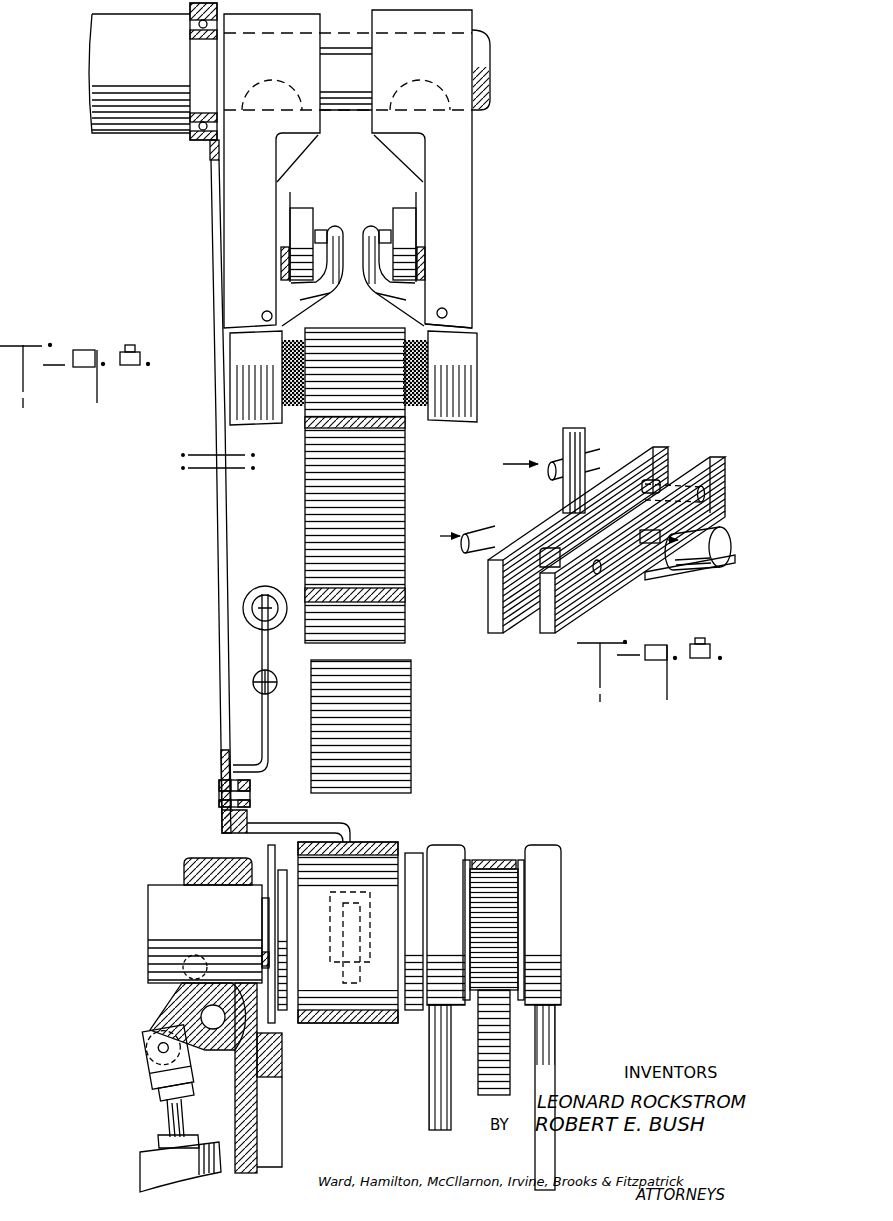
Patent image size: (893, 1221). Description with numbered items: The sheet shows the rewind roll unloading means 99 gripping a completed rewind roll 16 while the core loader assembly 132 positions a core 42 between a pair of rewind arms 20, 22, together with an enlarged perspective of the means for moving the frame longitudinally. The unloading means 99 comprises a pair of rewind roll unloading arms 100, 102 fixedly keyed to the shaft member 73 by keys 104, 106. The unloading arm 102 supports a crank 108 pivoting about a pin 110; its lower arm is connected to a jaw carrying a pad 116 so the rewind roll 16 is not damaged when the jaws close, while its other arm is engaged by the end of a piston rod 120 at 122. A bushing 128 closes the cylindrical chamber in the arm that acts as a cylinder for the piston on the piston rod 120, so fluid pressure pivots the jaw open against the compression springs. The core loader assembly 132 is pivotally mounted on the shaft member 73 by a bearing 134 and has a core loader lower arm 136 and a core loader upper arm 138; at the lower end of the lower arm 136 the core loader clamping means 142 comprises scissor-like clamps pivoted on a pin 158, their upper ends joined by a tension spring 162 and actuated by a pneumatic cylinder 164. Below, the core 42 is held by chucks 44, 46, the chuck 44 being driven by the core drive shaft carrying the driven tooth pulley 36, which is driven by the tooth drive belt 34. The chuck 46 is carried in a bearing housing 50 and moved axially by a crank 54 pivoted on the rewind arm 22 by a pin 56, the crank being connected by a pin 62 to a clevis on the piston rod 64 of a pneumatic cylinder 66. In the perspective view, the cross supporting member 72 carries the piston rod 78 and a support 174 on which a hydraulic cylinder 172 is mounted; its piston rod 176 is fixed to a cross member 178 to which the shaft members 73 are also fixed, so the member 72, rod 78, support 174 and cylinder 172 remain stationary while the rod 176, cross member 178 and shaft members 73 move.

In FIG. 8, the rewind roll 16 is at (412, 733).
In FIG. 8, the rewind arm 20 is at (548, 1053).
In FIG. 8, the rewind arm 22 is at (258, 1147).
In FIG. 8, the tooth drive belt 34 is at (508, 1030).
In FIG. 8, the driven tooth pulley 36 is at (491, 868).
In FIG. 8, the core 42 is at (377, 844).
In FIG. 8, the chuck 44 is at (417, 1012).
In FIG. 8, the chuck 46 is at (268, 850).
In FIG. 8, the bearing housing 50 is at (153, 905).
In FIG. 8, the crank 54 is at (180, 1002).
In FIG. 8, the pin 56 is at (215, 1030).
In FIG. 8, the pin 62 is at (160, 1047).
In FIG. 8, the piston rod 64 is at (167, 1117).
In FIG. 8, the pneumatic cylinder 66 is at (150, 1167).
In FIG. 9, the cross supporting member 72 is at (495, 603).
In FIG. 8, the shaft member 73 is at (478, 52).
In FIG. 9, the shaft member 73 is at (488, 538).
In FIG. 9, the piston rod 78 is at (568, 441).
In FIG. 8, the rewind roll unloading means 99 is at (482, 291).
In FIG. 8, the rewind roll unloading arm 100 is at (460, 213).
In FIG. 8, the rewind roll unloading arm 102 is at (237, 245).
In FIG. 8, the key 104 is at (424, 98).
In FIG. 8, the key 106 is at (272, 98).
In FIG. 8, the crank 108 is at (392, 291).
In FIG. 8, the pin 110 is at (262, 316).
In FIG. 8, the pad 116 is at (298, 389).
In FIG. 8, the piston rod 120 is at (319, 229).
In FIG. 8, the engagement point 122 is at (329, 226).
In FIG. 8, the bushing 128 is at (283, 258).
In FIG. 8, the core loader assembly 132 is at (207, 208).
In FIG. 8, the bearing 134 is at (195, 22).
In FIG. 8, the core loader lower arm 136 is at (222, 555).
In FIG. 8, the core loader upper arm 138 is at (216, 12).
In FIG. 8, the core loader clamping means 142 is at (363, 980).
In FIG. 8, the pin 158 is at (218, 795).
In FIG. 8, the tension spring 162 is at (252, 686).
In FIG. 8, the pneumatic cylinder 164 is at (246, 616).
In FIG. 9, the hydraulic cylinder 172 is at (700, 558).
In FIG. 9, the support 174 is at (682, 577).
In FIG. 9, the piston rod 176 is at (653, 540).
In FIG. 9, the cross member 178 is at (562, 630).